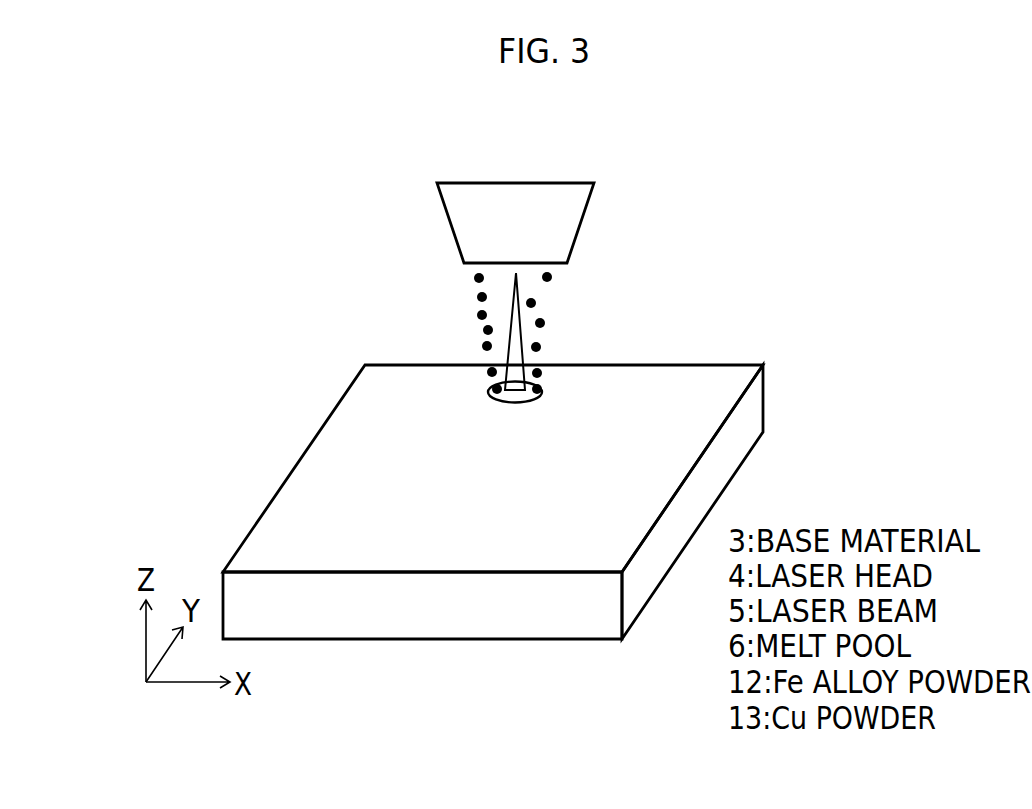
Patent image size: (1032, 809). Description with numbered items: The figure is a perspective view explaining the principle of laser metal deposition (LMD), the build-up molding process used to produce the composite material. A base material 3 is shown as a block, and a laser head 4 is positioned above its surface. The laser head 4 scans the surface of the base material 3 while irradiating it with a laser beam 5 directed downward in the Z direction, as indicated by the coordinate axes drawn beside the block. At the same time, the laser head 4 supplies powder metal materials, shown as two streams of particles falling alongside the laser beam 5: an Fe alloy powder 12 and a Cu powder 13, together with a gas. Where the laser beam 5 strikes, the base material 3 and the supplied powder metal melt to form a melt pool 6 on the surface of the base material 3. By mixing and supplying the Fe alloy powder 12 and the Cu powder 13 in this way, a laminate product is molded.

The base material 3 is at (447, 618).
The laser head 4 is at (515, 205).
The laser beam 5 is at (516, 337).
The melt pool 6 is at (518, 403).
The Fe alloy powder 12 is at (531, 303).
The Cu powder 13 is at (481, 315).